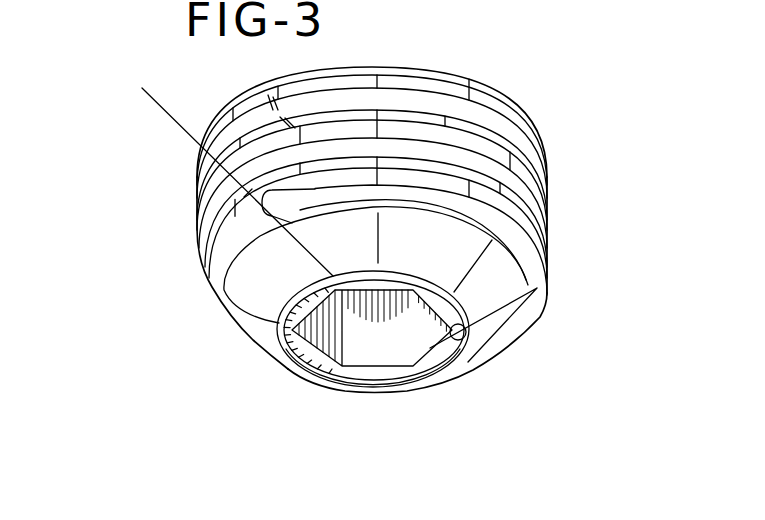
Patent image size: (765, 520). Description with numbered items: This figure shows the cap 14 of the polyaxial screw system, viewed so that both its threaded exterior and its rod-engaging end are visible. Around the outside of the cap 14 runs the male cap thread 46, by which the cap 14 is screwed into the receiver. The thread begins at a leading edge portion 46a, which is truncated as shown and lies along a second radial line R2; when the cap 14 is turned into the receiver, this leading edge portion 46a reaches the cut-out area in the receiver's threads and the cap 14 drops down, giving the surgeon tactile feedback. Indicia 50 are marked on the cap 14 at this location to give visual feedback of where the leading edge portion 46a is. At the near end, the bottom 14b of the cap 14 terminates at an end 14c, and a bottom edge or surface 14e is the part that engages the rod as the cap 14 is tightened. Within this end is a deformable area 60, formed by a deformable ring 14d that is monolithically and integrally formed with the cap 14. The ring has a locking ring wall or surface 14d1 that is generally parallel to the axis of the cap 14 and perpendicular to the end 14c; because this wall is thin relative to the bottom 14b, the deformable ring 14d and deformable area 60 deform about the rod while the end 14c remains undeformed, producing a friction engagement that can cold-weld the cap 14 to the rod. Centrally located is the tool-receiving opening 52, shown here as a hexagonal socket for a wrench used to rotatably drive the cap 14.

The cap 14 is at (504, 106).
The male cap thread 46 is at (574, 211).
The leading edge portion 46a is at (265, 222).
The indicia 50 is at (243, 110).
The second radial line R2 is at (180, 128).
The bottom edge or surface 14e is at (227, 305).
The bottom 14b is at (522, 300).
The end 14c is at (433, 363).
The deformable ring 14d is at (466, 336).
The locking ring wall or surface 14d1 is at (340, 390).
The deformable area 60 is at (288, 366).
The tool-receiving opening 52 is at (378, 355).